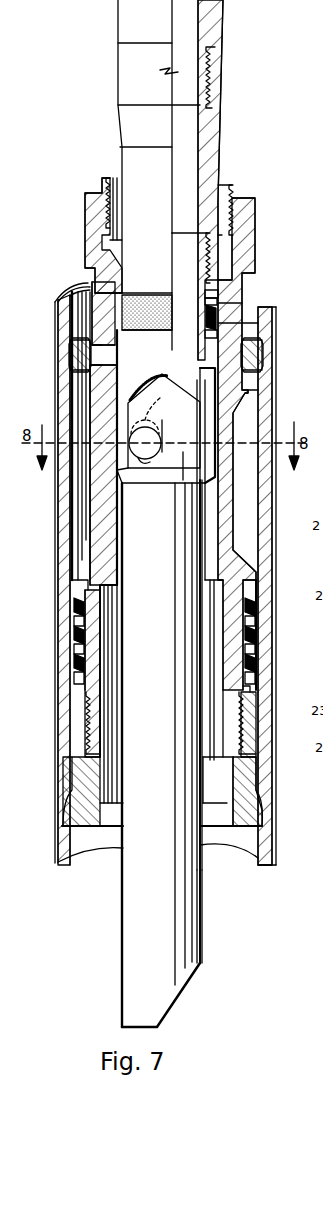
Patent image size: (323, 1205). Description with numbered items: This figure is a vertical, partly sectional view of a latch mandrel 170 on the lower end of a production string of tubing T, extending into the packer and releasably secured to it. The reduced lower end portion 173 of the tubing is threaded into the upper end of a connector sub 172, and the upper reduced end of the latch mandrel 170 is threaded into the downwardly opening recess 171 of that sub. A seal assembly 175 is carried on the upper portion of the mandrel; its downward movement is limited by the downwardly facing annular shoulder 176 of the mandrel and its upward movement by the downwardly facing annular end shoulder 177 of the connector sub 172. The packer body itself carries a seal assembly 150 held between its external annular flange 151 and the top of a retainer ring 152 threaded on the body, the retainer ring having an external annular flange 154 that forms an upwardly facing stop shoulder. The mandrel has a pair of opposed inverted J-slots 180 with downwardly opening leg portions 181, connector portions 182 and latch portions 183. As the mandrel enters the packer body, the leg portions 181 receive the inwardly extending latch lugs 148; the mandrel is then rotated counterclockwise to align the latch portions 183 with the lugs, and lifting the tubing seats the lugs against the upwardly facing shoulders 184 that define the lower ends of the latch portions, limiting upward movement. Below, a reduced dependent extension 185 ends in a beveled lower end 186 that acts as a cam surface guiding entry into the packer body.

The string of tubing T is at (222, 14).
The latch lugs 148 is at (158, 424).
The seal assembly 150 is at (258, 612).
The external annular flange 151 is at (250, 576).
The retainer ring 152 is at (249, 710).
The external annular flange 154 is at (264, 818).
The latch mandrel 170 is at (134, 367).
The downwardly opening recess 171 is at (212, 256).
The connector sub 172 is at (212, 112).
The reduced lower end portion 173 is at (212, 72).
The seal assembly 175 is at (220, 318).
The downwardly facing annular shoulder 176 is at (226, 336).
The downwardly facing annular end shoulder 177 is at (218, 304).
The inverted J-slots 180 is at (140, 402).
The downwardly opening leg portions 181 is at (183, 460).
The connector portions 182 is at (162, 375).
The latch portions 183 is at (128, 450).
The upwardly facing shoulders 184 is at (125, 462).
The reduced dependent extension 185 is at (137, 886).
The beveled lower end 186 is at (185, 980).